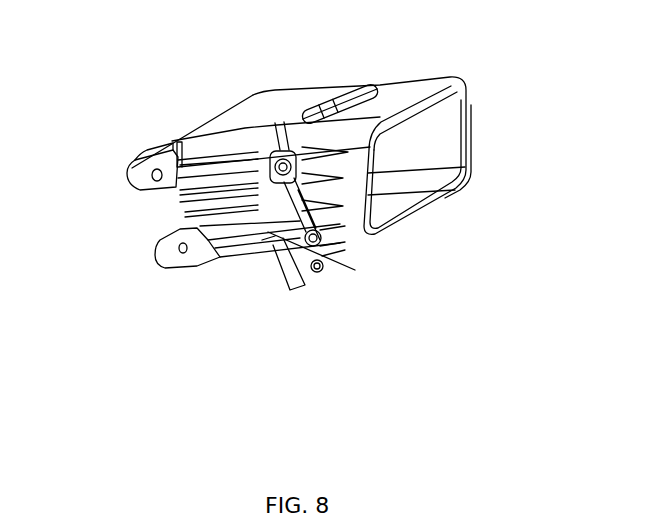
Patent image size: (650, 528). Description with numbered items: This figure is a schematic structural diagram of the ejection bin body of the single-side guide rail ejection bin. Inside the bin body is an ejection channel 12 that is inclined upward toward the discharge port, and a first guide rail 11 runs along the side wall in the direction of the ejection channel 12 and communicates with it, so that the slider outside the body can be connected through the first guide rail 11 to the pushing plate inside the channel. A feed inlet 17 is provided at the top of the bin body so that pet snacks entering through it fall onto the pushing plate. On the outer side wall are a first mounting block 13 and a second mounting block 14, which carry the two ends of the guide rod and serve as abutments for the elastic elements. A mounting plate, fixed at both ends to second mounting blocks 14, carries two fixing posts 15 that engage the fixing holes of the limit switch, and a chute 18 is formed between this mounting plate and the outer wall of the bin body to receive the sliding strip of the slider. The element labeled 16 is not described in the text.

The first guide rail 11 is at (176, 199).
The ejection channel 12 is at (427, 202).
The first mounting block 13 is at (158, 257).
The second mounting block 14 is at (280, 245).
The fixing post 15 is at (300, 222).
The housing rim 16 is at (388, 136).
The feed inlet 17 is at (323, 106).
The chute 18 is at (300, 190).